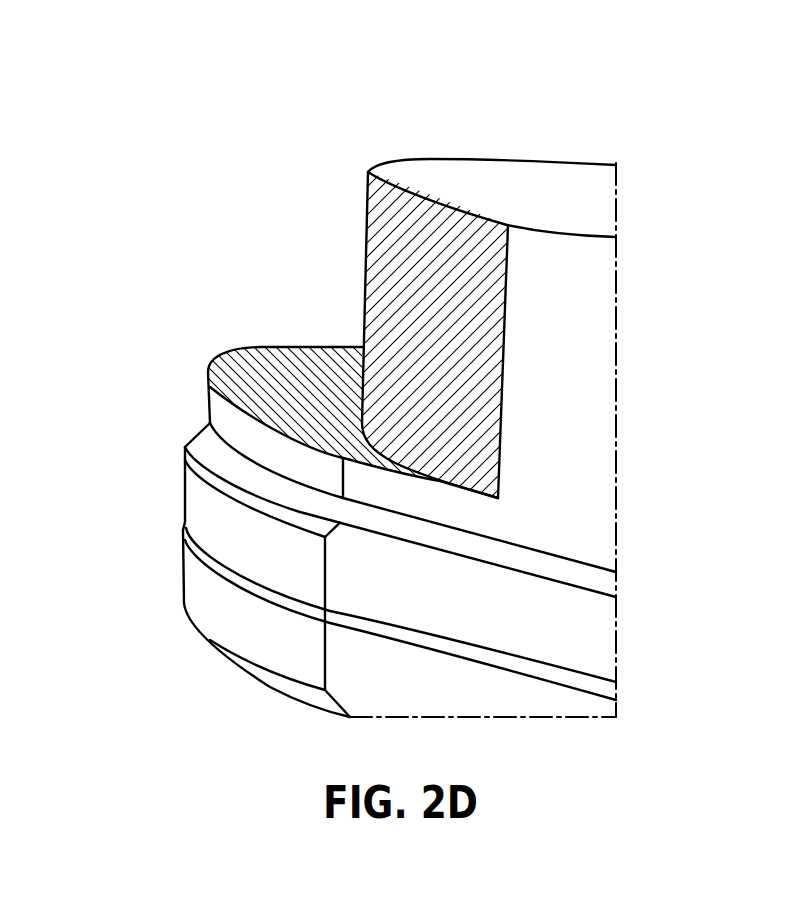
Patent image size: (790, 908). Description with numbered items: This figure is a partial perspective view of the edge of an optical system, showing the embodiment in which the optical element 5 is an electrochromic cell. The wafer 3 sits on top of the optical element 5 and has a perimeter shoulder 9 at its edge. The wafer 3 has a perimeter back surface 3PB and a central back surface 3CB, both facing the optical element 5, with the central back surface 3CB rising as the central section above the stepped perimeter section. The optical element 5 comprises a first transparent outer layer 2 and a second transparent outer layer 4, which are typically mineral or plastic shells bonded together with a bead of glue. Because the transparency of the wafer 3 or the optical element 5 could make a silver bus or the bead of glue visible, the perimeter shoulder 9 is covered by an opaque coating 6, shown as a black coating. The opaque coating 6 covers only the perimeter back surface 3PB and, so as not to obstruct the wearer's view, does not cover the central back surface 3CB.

The perimeter shoulder 9 is at (205, 272).
The wafer 3 is at (428, 70).
The perimeter back surface 3PB is at (320, 378).
The central back surface 3CB is at (417, 183).
The opaque coating 6 is at (472, 330).
The optical element 5 is at (103, 462).
The first transparent outer layer 2 is at (205, 510).
The second transparent outer layer 4 is at (205, 598).